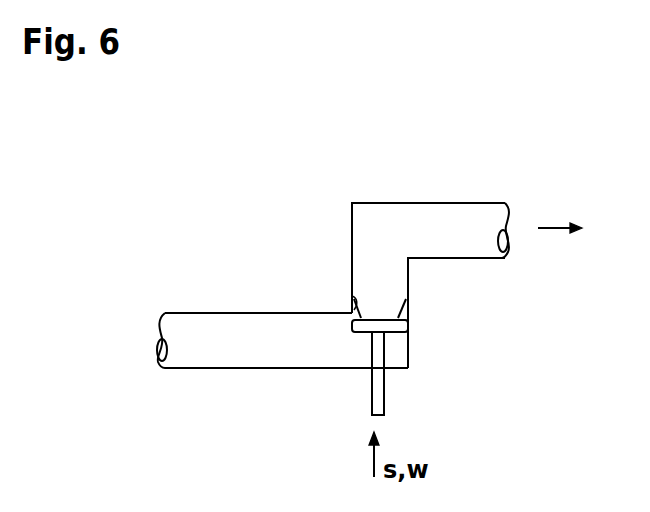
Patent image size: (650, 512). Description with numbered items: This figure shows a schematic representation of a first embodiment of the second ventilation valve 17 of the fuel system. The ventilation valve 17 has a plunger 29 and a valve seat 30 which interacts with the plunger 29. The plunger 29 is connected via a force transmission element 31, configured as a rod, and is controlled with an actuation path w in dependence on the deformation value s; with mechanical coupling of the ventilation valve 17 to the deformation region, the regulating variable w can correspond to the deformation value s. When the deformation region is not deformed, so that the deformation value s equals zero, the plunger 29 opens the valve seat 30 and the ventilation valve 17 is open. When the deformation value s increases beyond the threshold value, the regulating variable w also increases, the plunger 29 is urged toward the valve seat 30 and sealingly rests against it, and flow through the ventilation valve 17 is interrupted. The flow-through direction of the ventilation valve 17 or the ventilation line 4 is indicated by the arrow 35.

The ventilation line 4 is at (415, 216).
The ventilation valve 17 is at (476, 161).
The plunger 29 is at (396, 328).
The valve seat 30 is at (352, 299).
The force transmission element 31 is at (386, 400).
The arrow 35 is at (555, 228).